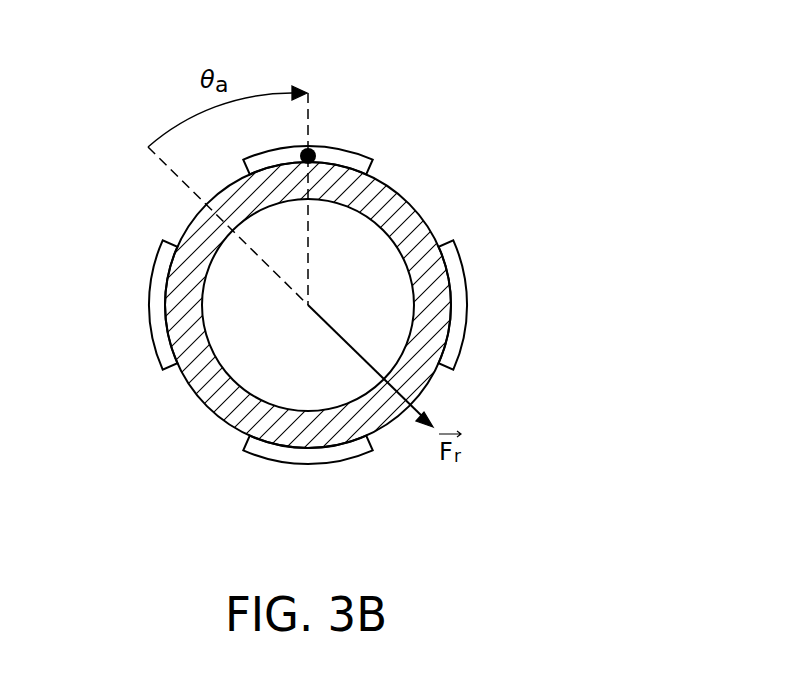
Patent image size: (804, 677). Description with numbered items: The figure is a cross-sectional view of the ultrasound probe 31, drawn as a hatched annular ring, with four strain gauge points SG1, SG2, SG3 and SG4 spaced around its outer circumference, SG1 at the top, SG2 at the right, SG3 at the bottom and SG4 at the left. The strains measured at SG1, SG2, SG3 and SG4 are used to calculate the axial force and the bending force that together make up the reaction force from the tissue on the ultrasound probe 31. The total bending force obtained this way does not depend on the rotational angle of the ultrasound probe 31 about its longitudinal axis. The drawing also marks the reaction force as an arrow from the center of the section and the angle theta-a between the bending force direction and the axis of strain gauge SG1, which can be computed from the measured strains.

The ultrasound probe 31 is at (409, 203).
The strain gauge SG1 is at (312, 148).
The strain gauge SG2 is at (470, 302).
The strain gauge SG3 is at (313, 467).
The strain gauge SG4 is at (157, 307).